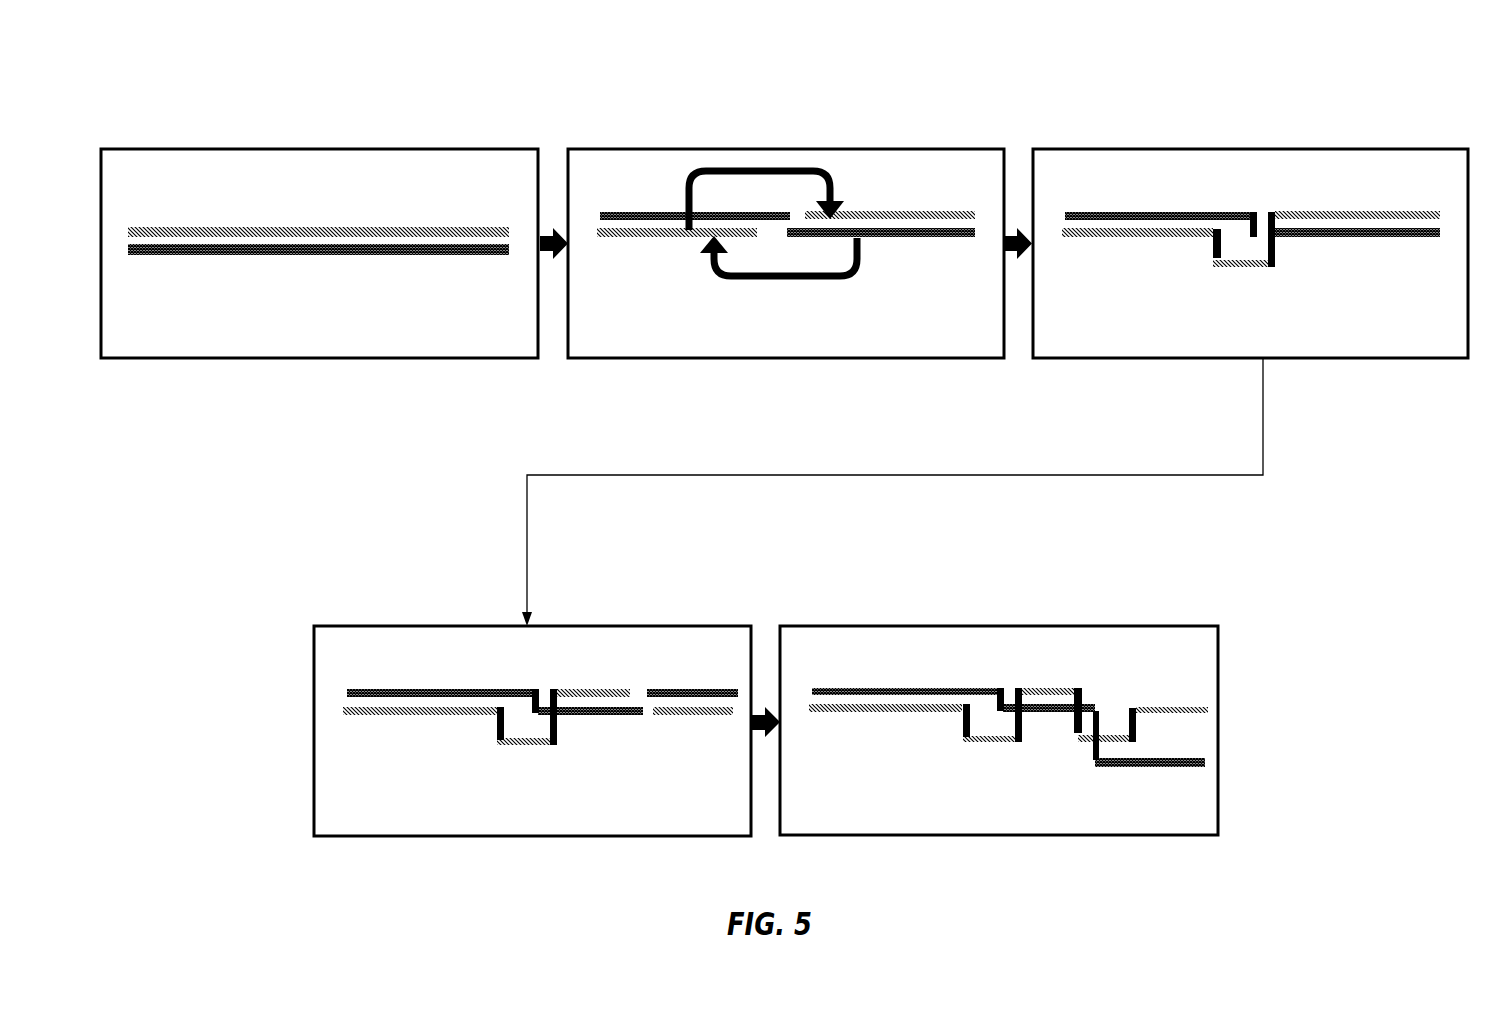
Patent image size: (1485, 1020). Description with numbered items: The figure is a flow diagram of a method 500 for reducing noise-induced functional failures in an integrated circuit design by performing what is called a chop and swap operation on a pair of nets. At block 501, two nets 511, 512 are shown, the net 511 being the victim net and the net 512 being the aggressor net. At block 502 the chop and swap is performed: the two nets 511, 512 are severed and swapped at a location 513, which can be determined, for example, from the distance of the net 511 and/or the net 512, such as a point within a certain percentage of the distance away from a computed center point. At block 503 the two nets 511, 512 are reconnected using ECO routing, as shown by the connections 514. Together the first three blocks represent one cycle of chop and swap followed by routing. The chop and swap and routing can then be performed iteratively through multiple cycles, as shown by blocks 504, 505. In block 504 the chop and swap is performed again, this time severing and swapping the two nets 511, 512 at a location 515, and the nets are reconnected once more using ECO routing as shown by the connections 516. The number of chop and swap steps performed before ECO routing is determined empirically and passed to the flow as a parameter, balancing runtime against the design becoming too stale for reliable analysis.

The method 500 is at (152, 88).
The block 501 is at (145, 148).
The block 502 is at (608, 148).
The block 503 is at (1073, 148).
The block 504 is at (358, 627).
The block 505 is at (822, 626).
The net 511 is at (207, 232).
The net 512 is at (248, 253).
The location 513 is at (776, 249).
The connections 514 is at (1250, 210).
The location 515 is at (678, 668).
The connections 516 is at (1105, 682).